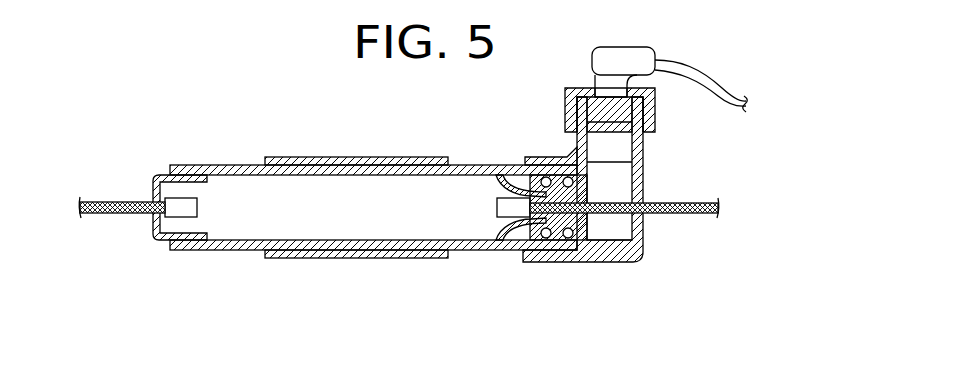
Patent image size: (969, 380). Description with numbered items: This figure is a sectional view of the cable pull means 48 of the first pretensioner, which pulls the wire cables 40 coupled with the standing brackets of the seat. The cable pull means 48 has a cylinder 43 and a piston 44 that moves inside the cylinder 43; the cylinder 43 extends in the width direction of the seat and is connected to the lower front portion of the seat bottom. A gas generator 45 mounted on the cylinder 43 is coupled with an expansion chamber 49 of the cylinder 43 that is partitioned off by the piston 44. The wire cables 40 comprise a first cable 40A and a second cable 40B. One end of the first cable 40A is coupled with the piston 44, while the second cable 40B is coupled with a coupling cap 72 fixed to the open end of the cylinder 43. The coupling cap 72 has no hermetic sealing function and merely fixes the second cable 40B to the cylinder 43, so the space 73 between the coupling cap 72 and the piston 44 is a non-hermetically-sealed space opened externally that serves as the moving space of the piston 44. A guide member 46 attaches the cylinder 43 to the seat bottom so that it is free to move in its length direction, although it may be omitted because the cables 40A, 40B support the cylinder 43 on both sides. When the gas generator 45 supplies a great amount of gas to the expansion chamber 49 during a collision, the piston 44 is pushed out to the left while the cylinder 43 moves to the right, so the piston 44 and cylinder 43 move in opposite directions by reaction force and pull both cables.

The wire cable 40 is at (412, 192).
The first cable 40A is at (666, 200).
The second cable 40B is at (103, 201).
The cylinder 43 is at (224, 165).
The piston 44 is at (597, 222).
The gas generator 45 is at (620, 112).
The guide member 46 is at (332, 160).
The cable pull means 48 is at (470, 158).
The expansion chamber 49 is at (618, 223).
The coupling cap 72 is at (157, 175).
The space 73 is at (240, 226).